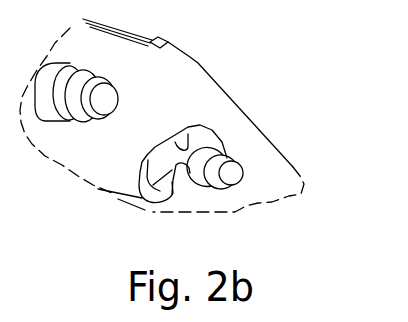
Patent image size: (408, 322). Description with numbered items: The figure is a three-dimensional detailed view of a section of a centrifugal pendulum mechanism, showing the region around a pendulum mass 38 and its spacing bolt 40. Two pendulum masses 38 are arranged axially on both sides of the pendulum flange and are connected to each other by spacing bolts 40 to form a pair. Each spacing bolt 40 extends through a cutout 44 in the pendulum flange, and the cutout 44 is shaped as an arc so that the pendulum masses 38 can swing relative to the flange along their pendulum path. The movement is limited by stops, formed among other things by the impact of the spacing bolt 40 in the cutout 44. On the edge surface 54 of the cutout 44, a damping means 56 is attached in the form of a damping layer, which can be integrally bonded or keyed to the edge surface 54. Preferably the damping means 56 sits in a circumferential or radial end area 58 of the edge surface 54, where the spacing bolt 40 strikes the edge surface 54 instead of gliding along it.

The pendulum mass 38 is at (278, 168).
The spacing bolt 40 is at (225, 150).
The cutout 44 is at (190, 133).
The edge surface 54 is at (188, 134).
The damping means 56 is at (113, 200).
The end area 58 is at (143, 200).